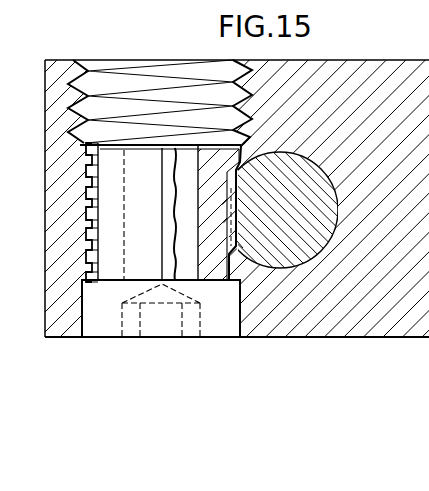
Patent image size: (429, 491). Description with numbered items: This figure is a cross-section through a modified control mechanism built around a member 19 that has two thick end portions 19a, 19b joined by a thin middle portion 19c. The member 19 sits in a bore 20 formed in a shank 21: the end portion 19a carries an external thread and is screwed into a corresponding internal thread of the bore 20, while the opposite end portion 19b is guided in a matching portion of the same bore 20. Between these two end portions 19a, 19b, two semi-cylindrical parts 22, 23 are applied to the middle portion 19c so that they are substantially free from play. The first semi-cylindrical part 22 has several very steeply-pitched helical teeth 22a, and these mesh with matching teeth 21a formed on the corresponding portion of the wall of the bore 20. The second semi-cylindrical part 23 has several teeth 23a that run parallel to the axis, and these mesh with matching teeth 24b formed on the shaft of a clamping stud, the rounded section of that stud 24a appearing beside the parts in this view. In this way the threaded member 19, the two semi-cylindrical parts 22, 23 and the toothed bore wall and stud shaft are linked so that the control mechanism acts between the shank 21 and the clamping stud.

The member 19 is at (108, 101).
The end portion 19a is at (143, 72).
The end portion 19b is at (107, 325).
The middle portion 19c is at (183, 157).
The bore 20 is at (239, 240).
The shank 21 is at (393, 315).
The teeth 21a is at (88, 265).
The semi-cylindrical part 22 is at (133, 173).
The helical teeth 22a is at (87, 226).
The semi-cylindrical part 23 is at (213, 270).
The teeth 23a is at (234, 236).
The ball 24a is at (307, 245).
The teeth 24b is at (244, 240).